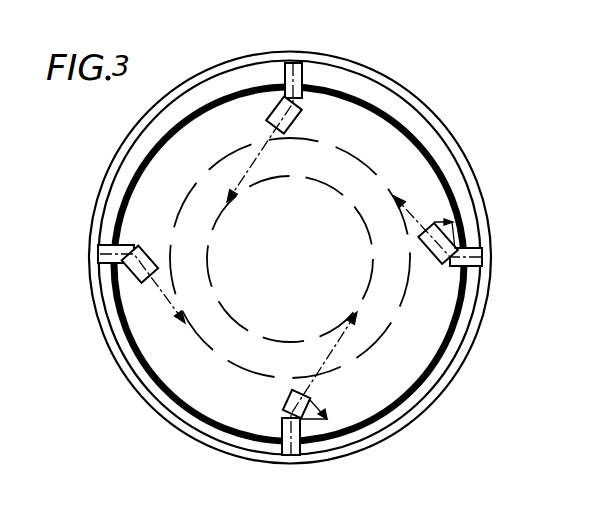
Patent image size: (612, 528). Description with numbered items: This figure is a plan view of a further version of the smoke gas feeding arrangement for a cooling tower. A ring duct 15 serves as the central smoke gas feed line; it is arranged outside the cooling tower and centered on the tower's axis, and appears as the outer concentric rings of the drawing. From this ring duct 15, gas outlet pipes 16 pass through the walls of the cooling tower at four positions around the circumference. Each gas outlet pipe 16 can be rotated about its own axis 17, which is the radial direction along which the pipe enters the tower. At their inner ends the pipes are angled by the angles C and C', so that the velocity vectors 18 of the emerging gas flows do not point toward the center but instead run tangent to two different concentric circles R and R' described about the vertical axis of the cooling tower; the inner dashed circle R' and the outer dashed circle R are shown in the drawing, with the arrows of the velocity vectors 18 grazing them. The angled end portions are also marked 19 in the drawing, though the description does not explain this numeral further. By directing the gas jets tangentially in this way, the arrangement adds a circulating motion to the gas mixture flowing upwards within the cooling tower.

The ring duct 15 is at (458, 144).
The gas outlet pipe 16 is at (138, 247).
The axis 17 is at (296, 72).
The velocity vector 18 is at (256, 158).
The nozzle block 19 is at (303, 101).
The concentric circle R is at (290, 258).
The concentric circle R' is at (290, 259).
The angle C is at (442, 225).
The angle C' is at (325, 409).